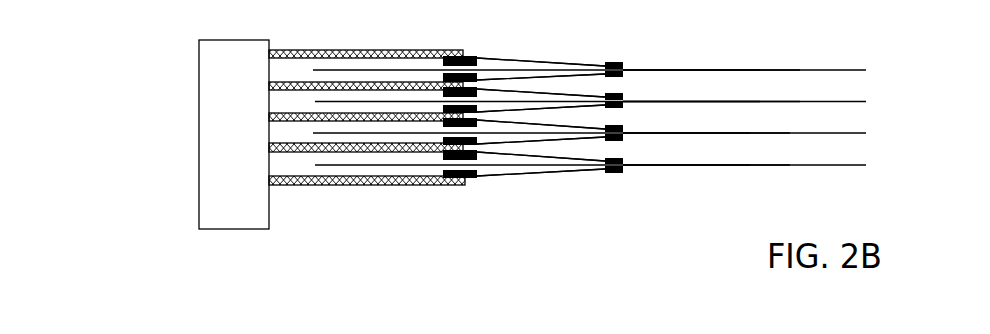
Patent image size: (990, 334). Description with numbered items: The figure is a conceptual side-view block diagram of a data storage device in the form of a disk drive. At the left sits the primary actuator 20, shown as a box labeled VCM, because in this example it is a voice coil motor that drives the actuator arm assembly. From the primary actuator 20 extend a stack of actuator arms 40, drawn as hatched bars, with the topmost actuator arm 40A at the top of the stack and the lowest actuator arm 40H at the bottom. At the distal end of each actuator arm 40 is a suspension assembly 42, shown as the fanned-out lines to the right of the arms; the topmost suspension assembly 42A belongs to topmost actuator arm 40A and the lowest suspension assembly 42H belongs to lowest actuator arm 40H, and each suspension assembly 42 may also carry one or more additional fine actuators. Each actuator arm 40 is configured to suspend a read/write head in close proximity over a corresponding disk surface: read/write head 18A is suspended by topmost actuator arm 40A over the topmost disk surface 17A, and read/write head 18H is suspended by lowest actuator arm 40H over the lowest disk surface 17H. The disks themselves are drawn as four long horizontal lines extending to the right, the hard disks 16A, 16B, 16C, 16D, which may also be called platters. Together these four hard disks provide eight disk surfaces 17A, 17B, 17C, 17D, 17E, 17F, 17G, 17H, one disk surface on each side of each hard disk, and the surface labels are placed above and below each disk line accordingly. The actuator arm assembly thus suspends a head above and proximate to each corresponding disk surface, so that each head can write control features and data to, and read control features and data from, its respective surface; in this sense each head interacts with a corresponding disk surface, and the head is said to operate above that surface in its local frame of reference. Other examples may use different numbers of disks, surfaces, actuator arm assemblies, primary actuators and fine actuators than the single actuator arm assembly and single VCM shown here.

The primary actuator 20 is at (199, 75).
The actuator arms 40 is at (378, 209).
The topmost actuator arm 40A is at (387, 49).
The lowest actuator arm 40H is at (336, 186).
The suspension assembly 42 is at (535, 209).
The topmost suspension assembly 42A is at (561, 47).
The lowest suspension assembly 42H is at (559, 186).
The read/write head 18A is at (636, 53).
The read/write head 18H is at (634, 181).
The disk surface 17A is at (779, 70).
The disk surface 17B is at (761, 71).
The disk surface 17C is at (779, 101).
The disk surface 17D is at (761, 103).
The disk surface 17E is at (766, 133).
The disk surface 17F is at (746, 134).
The disk surface 17G is at (766, 165).
The disk surface 17H is at (746, 166).
The hard disk 16A is at (880, 70).
The hard disk 16B is at (880, 102).
The hard disk 16C is at (880, 133).
The hard disk 16D is at (880, 165).